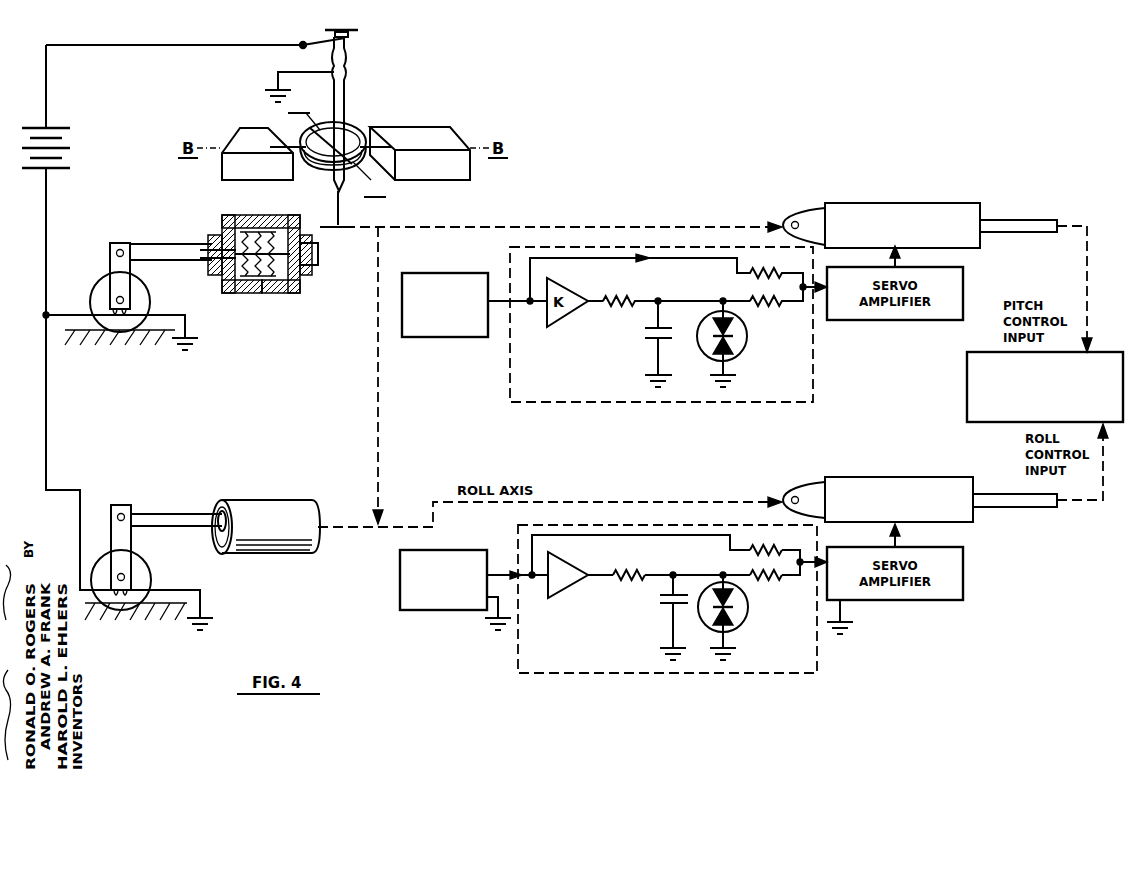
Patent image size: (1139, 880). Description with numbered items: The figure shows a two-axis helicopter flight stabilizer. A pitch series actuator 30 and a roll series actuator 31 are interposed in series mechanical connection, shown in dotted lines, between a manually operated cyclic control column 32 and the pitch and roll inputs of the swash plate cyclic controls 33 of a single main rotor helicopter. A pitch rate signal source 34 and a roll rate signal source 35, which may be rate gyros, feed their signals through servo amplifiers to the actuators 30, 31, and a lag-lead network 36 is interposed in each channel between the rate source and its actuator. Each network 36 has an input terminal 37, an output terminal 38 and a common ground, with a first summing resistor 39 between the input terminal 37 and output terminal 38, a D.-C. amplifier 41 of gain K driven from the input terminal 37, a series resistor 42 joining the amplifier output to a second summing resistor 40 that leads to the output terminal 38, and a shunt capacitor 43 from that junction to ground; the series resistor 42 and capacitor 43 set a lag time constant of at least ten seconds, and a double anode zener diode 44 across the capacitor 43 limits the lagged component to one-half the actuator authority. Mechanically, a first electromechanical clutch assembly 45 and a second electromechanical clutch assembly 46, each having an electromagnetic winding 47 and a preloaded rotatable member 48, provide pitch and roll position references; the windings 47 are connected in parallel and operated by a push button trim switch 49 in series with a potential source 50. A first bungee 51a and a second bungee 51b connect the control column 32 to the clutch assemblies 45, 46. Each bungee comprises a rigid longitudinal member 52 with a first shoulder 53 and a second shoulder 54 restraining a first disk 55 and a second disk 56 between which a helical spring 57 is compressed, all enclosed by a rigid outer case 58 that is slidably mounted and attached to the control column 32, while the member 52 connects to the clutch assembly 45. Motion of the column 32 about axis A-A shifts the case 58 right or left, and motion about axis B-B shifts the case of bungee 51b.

The pitch series actuator 30 is at (877, 215).
The roll series actuator 31 is at (856, 488).
The cyclic control column 32 is at (362, 96).
The swash plate cyclic controls 33 is at (997, 400).
The pitch rate signal source 34 is at (433, 323).
The roll rate signal source 35 is at (432, 552).
The lag-lead network 36 is at (508, 328).
The input terminal 37 is at (533, 580).
The output terminal 38 is at (802, 566).
The first summing resistor 39 is at (750, 552).
The second summing resistor 40 is at (772, 574).
The D.-C. amplifier 41 is at (560, 594).
The series resistor 42 is at (628, 578).
The shunt capacitor 43 is at (668, 608).
The double anode zener diode 44 is at (740, 343).
The first electromechanical clutch assembly 45 is at (88, 276).
The second electromechanical clutch assembly 46 is at (96, 540).
The electromagnetic winding 47 is at (142, 308).
The rotatable member 48 is at (114, 252).
The push button trim switch 49 is at (352, 46).
The potential source 50 is at (56, 128).
The first double-acting preloaded bungee 51a is at (206, 212).
The second double-acting preloaded bungee 51b is at (258, 498).
The rigid longitudinal member 52 is at (156, 250).
The first shoulder 53 is at (216, 258).
The second shoulder 54 is at (312, 256).
The first spring-restraining disk 55 is at (232, 291).
The second spring-restraining disk 56 is at (281, 291).
The helical spring 57 is at (263, 290).
The rigid outer case 58 is at (255, 214).